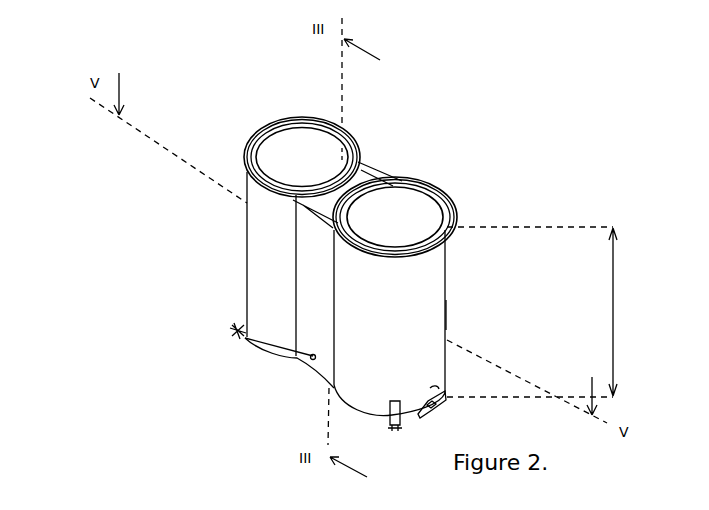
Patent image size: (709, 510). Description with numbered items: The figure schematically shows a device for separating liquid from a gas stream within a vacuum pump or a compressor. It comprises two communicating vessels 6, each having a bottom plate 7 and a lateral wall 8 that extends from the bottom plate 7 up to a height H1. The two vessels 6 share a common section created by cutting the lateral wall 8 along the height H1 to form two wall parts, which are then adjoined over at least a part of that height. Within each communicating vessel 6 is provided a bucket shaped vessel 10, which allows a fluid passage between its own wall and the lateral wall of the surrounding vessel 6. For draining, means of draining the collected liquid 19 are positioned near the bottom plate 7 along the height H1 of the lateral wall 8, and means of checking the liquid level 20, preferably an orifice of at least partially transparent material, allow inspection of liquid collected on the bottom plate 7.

The communicating vessels 6 is at (270, 253).
The bucket shaped vessel 10 is at (280, 153).
The lateral wall 8 is at (447, 338).
The means of draining the collected liquid 19 is at (447, 396).
The means of checking the liquid level 20 is at (237, 330).
The bottom plate 7 is at (297, 358).
The height H1 is at (550, 312).